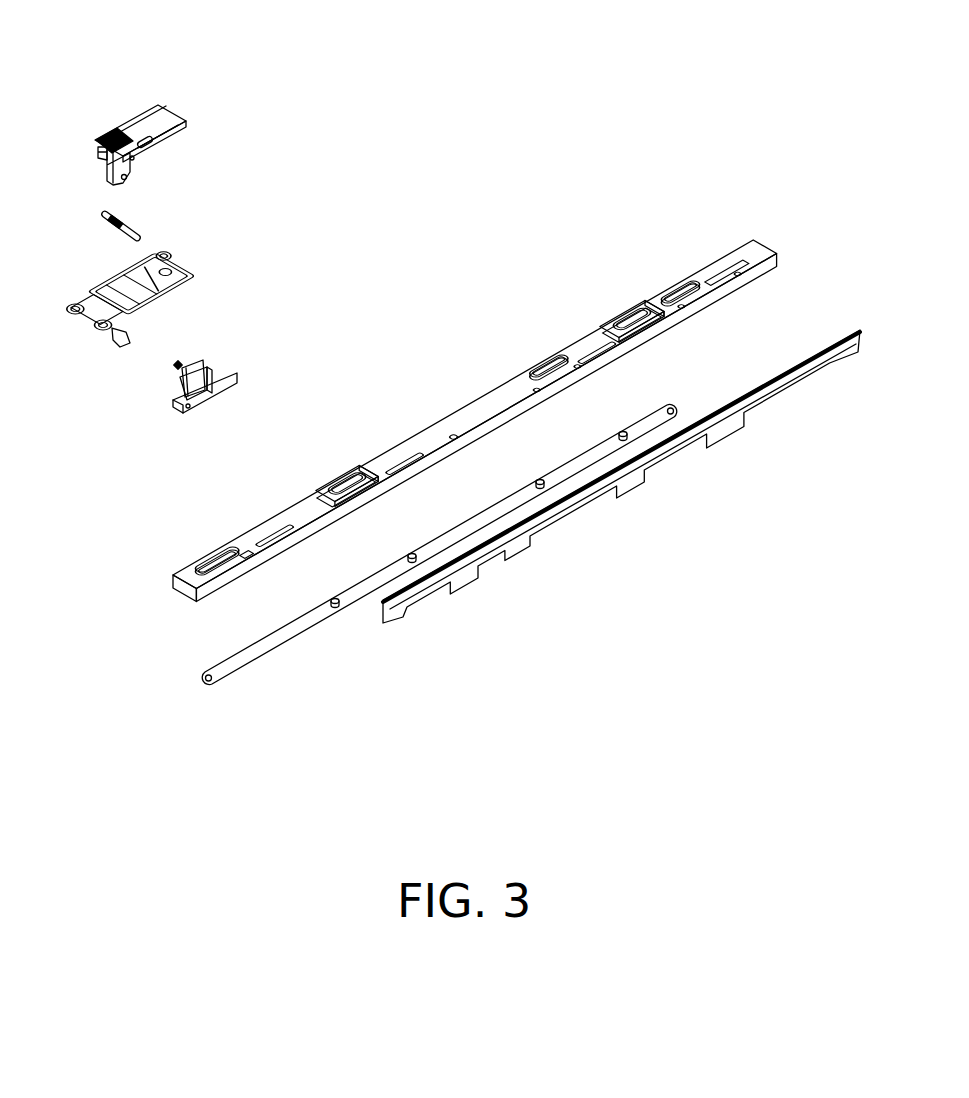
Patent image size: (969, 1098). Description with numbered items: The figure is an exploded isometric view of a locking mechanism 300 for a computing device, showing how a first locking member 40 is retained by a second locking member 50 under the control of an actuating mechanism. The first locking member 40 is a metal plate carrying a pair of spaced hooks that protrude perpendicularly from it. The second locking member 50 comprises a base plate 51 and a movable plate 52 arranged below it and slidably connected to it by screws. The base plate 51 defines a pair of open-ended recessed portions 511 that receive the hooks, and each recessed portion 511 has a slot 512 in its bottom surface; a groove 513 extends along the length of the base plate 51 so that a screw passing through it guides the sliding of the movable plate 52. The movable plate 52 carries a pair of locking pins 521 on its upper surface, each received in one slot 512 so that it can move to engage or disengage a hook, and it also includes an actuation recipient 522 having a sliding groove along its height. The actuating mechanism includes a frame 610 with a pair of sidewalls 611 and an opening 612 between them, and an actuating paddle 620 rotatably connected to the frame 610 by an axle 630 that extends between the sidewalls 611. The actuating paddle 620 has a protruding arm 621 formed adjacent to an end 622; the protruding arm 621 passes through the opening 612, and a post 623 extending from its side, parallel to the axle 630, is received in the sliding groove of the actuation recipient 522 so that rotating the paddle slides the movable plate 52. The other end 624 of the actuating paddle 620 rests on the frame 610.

The sliding mechanism 300 is at (355, 97).
The first locking member 40 is at (562, 508).
The second locking member 50 is at (103, 607).
The base plate 51 is at (185, 586).
The movable plate 52 is at (205, 672).
The recessed portions 511 is at (640, 306).
The slot 512 is at (622, 332).
The groove 513 is at (540, 371).
The locking pins 521 is at (342, 608).
The actuation recipient 522 is at (185, 410).
The frame 610 is at (209, 280).
The sidewalls 611 is at (128, 322).
The opening 612 is at (88, 325).
The actuating paddle 620 is at (207, 102).
The protruding arm 621 is at (126, 148).
The end 622 is at (98, 153).
The post 623 is at (181, 360).
The other end 624 is at (164, 118).
The axle 630 is at (110, 213).